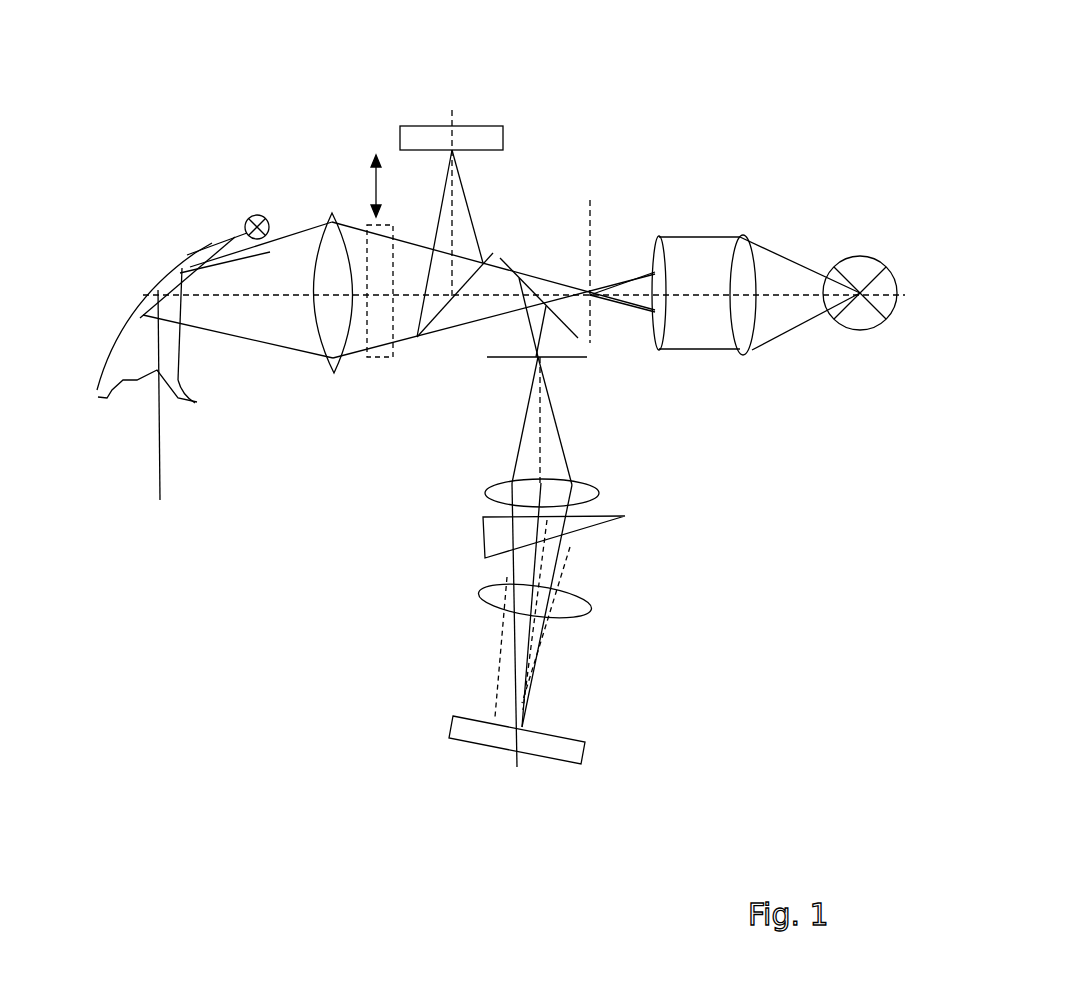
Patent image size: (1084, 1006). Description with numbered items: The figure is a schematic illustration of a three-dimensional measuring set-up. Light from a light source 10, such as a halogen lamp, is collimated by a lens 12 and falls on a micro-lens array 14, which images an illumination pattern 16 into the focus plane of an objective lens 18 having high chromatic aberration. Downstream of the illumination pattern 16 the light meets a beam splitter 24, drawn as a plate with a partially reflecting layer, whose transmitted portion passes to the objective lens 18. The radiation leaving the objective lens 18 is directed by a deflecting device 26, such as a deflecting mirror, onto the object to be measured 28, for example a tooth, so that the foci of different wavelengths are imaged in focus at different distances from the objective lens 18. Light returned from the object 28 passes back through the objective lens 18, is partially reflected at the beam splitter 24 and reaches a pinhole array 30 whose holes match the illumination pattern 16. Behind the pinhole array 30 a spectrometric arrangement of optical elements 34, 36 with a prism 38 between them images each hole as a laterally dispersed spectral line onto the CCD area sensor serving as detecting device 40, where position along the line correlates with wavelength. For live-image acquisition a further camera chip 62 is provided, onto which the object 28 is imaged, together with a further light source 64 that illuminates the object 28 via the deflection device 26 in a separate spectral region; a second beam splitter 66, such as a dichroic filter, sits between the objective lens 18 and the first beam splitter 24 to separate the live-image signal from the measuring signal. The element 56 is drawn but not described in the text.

The light source 10 is at (866, 268).
The lens 12 is at (740, 236).
The micro-lens array 14 is at (655, 237).
The illumination pattern 16 is at (588, 200).
The objective lens 18 is at (328, 213).
The beam splitter 24 is at (505, 260).
The deflecting device 26 is at (158, 290).
The object to be measured 28 is at (138, 380).
The pinhole array 30 is at (493, 360).
The optical element 34 is at (597, 491).
The optical element 36 is at (592, 615).
The prism 38 is at (620, 522).
The detecting device 40 is at (455, 718).
The movable element 56 is at (368, 225).
The camera chip 62 is at (420, 126).
The light source 64 is at (250, 216).
The second beam splitter 66 is at (417, 337).